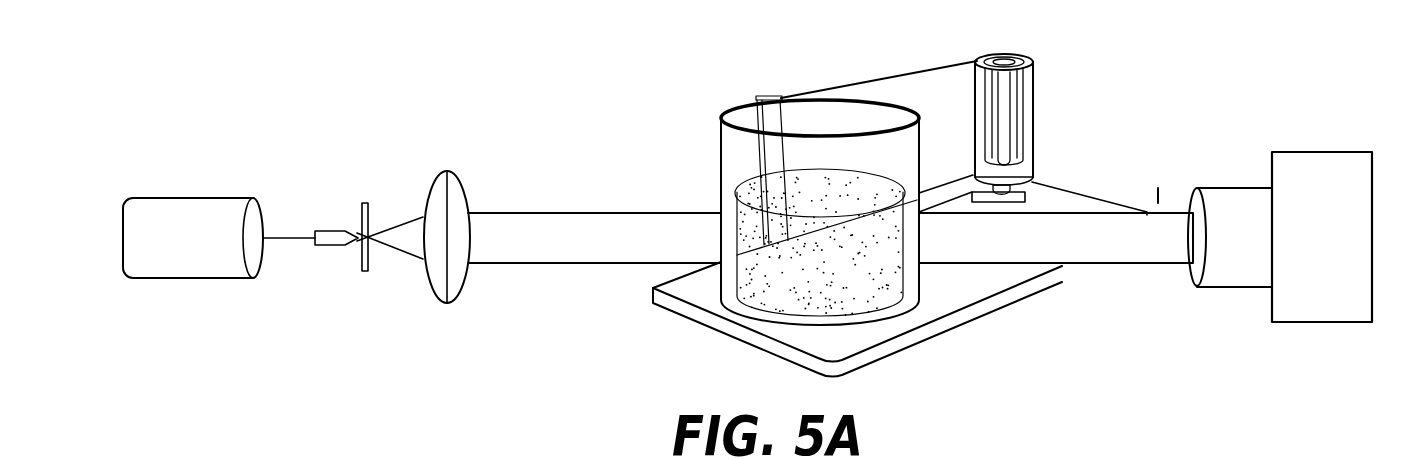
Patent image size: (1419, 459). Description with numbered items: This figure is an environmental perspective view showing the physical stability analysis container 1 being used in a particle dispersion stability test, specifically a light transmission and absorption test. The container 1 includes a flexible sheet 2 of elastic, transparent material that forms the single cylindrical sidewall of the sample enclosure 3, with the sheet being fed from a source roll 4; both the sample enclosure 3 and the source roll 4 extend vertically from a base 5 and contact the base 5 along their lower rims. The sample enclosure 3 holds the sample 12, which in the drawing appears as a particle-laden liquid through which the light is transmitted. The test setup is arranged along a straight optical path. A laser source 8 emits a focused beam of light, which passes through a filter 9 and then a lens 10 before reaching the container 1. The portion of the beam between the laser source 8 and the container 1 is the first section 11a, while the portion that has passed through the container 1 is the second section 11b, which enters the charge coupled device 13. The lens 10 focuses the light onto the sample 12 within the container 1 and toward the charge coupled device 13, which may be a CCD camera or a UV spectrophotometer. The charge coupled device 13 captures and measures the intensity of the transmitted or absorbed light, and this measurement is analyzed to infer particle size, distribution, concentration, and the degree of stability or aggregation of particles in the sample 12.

The physical stability analysis container 1 is at (776, 366).
The flexible sheet 2 is at (907, 79).
The sample enclosure 3 is at (802, 113).
The source roll 4 is at (1025, 83).
The base 5 is at (692, 307).
The laser source 8 is at (224, 186).
The filter 9 is at (365, 277).
The lens 10 is at (436, 177).
The first section of the beam of light 11a is at (617, 267).
The second section of the beam of light 11b is at (1017, 247).
The sample solution in beaker 12 is at (840, 297).
The charge coupled device (CCD) 13 is at (1243, 213).